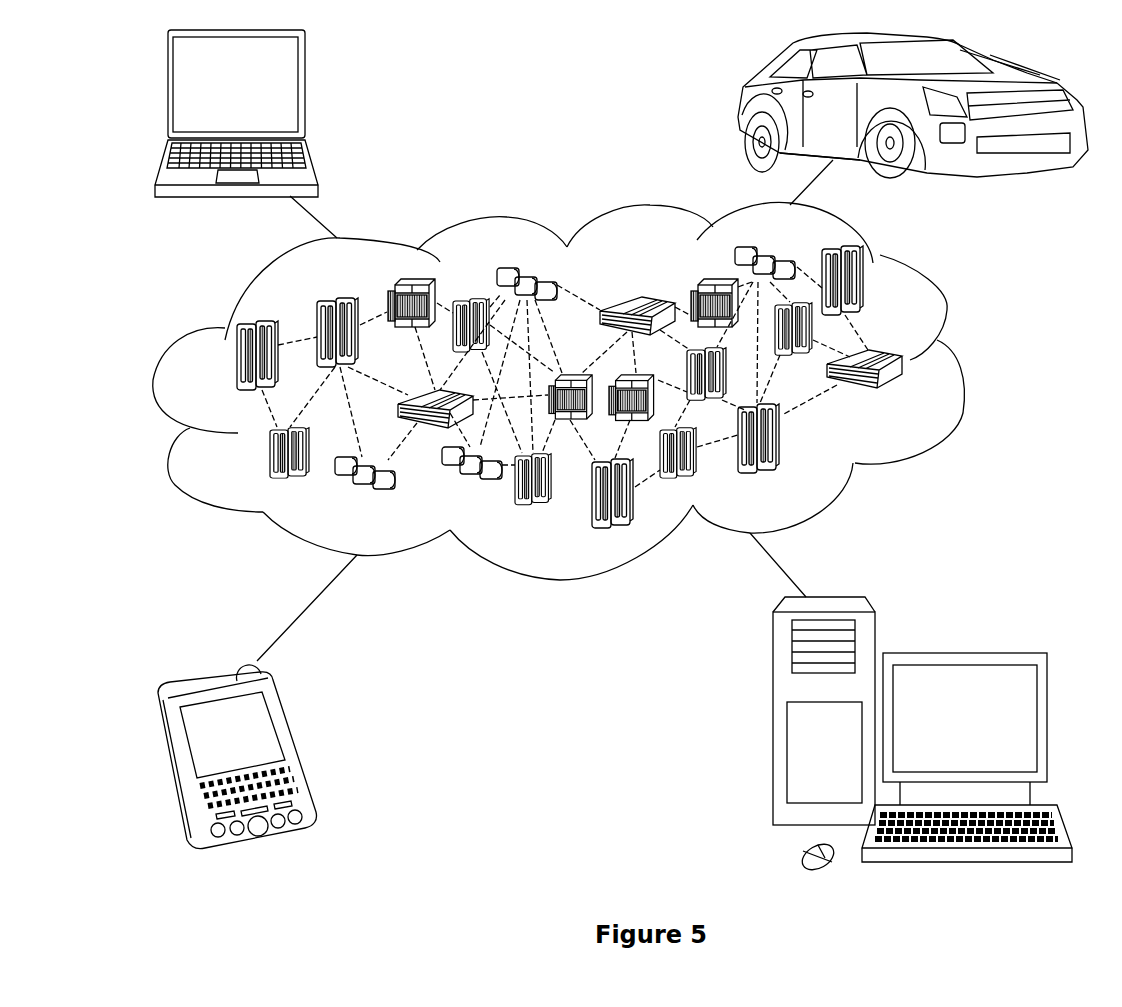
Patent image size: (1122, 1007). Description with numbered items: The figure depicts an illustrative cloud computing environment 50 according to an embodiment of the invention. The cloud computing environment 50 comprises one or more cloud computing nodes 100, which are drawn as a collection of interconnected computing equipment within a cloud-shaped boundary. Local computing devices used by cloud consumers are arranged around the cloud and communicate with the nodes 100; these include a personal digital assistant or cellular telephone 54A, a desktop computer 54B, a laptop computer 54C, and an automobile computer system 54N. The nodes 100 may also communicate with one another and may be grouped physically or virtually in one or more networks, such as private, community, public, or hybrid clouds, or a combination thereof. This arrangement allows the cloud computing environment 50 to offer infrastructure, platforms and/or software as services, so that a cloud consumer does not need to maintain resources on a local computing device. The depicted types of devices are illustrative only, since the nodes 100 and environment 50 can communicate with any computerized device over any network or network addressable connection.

The cloud computing environment 50 is at (963, 363).
The cloud computing nodes 100 is at (903, 395).
The personal digital assistant (PDA) or cellular telephone 54A is at (300, 750).
The desktop computer 54B is at (960, 653).
The laptop computer 54C is at (305, 96).
The automobile computer system 54N is at (742, 108).